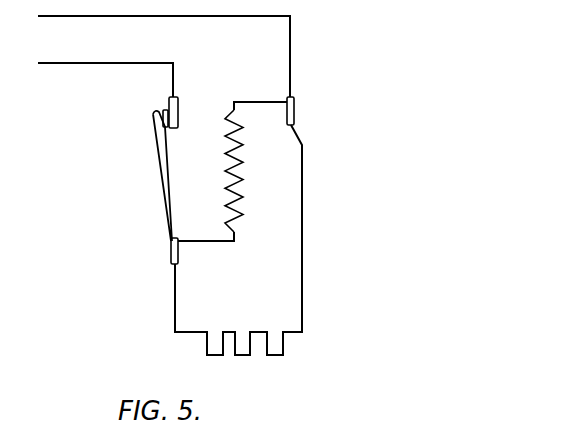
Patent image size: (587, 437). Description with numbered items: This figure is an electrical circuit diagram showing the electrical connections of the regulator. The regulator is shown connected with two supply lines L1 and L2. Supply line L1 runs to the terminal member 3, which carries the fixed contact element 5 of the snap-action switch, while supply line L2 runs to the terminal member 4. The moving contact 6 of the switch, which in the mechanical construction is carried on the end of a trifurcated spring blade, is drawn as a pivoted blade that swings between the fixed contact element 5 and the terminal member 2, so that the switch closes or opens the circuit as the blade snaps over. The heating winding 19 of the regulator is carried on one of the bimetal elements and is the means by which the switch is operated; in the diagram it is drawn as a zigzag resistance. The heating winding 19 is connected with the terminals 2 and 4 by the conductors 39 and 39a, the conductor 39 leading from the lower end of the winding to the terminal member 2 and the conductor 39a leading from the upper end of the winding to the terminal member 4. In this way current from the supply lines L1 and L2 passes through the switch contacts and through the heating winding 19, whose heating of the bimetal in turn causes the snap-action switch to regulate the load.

The supply line L1 is at (38, 63).
The supply line L2 is at (155, 17).
The terminal member 2 is at (170, 252).
The terminal member 3 is at (179, 121).
The terminal member 4 is at (296, 118).
The contact element 5 is at (162, 107).
The moving contact 6 is at (163, 134).
The heating winding 19 is at (243, 203).
The conductor 39 is at (200, 244).
The conductor 39a is at (259, 100).